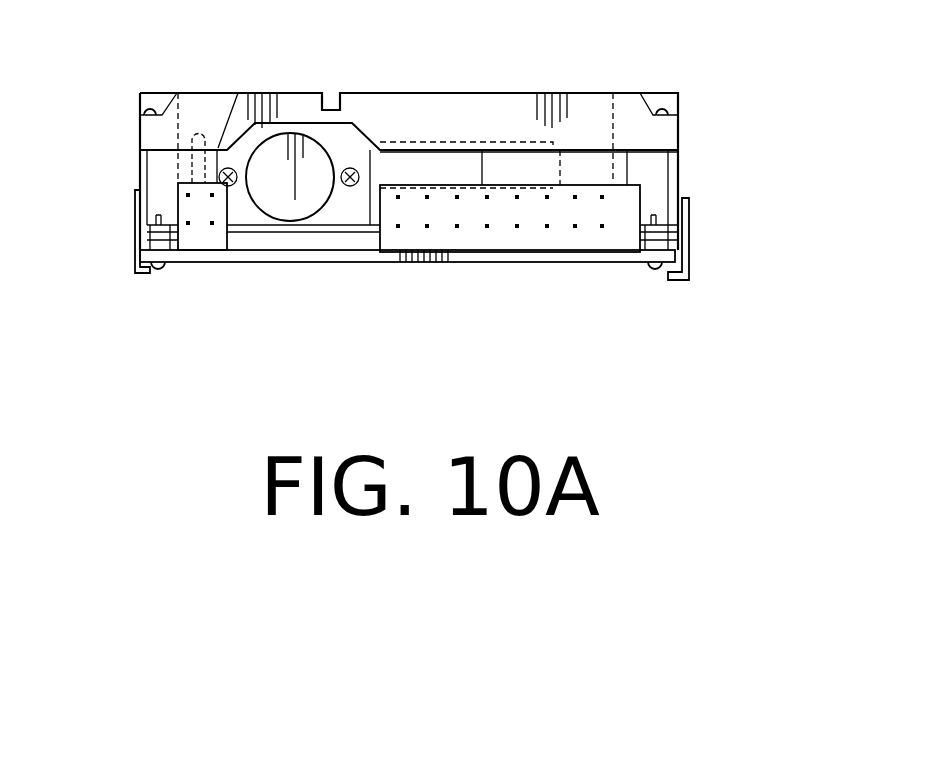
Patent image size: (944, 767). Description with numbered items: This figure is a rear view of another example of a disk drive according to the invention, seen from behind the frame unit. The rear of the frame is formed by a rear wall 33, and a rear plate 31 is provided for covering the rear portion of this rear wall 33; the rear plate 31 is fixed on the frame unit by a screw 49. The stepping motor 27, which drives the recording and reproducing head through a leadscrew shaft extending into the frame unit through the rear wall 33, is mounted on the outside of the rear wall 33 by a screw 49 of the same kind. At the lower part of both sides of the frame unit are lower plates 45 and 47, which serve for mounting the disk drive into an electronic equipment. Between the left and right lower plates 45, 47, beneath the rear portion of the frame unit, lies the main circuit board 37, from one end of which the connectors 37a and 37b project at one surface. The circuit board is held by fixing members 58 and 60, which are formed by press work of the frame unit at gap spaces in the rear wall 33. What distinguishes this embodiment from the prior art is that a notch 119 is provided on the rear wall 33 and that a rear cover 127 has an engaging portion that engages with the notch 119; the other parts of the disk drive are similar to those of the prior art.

The stepping motor 27 is at (330, 145).
The rear plate 31 is at (575, 93).
The rear wall 33 is at (245, 213).
The main circuit board 37 is at (380, 262).
The connector 37a is at (516, 228).
The connector 37b is at (212, 242).
The lower plate 45 is at (137, 250).
The lower plate 47 is at (688, 268).
The screw 49 is at (153, 93).
The fixing member 58 is at (138, 232).
The fixing member 60 is at (692, 235).
The notch 119 is at (330, 92).
The rear cover 127 is at (598, 172).